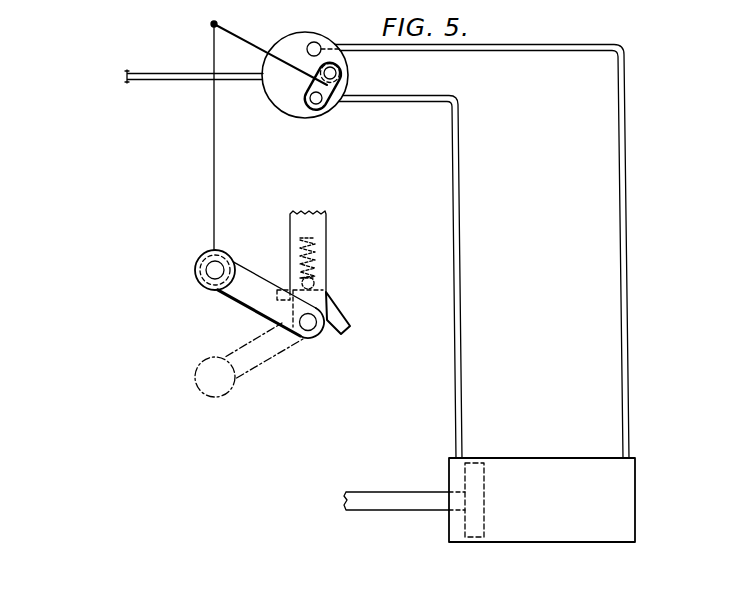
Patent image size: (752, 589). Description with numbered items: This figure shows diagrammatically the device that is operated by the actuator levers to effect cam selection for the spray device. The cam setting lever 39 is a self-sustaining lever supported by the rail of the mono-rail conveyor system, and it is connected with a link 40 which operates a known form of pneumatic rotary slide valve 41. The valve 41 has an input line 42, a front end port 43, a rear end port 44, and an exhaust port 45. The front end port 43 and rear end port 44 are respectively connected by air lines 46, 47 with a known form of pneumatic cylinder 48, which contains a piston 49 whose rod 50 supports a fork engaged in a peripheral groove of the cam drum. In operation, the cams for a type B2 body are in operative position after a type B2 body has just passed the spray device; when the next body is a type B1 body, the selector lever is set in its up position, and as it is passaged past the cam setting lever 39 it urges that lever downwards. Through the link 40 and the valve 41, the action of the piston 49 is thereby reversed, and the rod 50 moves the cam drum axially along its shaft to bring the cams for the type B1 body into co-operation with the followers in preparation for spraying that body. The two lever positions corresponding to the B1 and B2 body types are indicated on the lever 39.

The cam setting lever 39 is at (245, 282).
The link 40 is at (214, 207).
The pneumatic rotary slide valve 41 is at (333, 40).
The input line 42 is at (176, 73).
The front end port 43 is at (326, 104).
The rear end port 44 is at (308, 47).
The exhaust port 45 is at (339, 75).
The air line 46 is at (461, 381).
The air line 47 is at (621, 357).
The pneumatic cylinder 48 is at (570, 459).
The piston 49 is at (474, 466).
The rod 50 is at (388, 502).
The type B1 body B1 is at (235, 360).
The type B2 body B2 is at (199, 270).